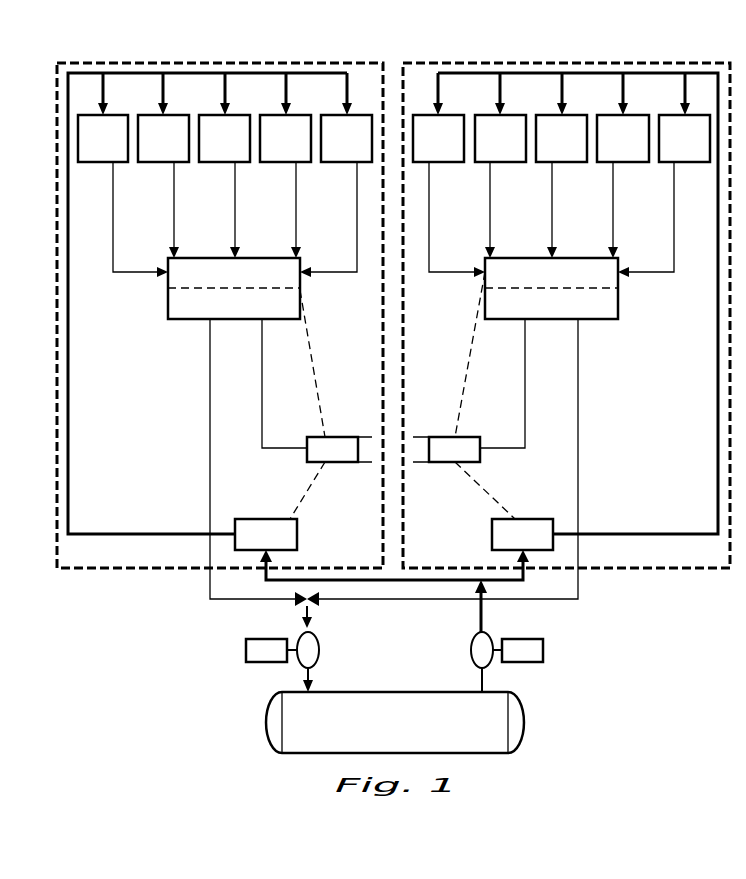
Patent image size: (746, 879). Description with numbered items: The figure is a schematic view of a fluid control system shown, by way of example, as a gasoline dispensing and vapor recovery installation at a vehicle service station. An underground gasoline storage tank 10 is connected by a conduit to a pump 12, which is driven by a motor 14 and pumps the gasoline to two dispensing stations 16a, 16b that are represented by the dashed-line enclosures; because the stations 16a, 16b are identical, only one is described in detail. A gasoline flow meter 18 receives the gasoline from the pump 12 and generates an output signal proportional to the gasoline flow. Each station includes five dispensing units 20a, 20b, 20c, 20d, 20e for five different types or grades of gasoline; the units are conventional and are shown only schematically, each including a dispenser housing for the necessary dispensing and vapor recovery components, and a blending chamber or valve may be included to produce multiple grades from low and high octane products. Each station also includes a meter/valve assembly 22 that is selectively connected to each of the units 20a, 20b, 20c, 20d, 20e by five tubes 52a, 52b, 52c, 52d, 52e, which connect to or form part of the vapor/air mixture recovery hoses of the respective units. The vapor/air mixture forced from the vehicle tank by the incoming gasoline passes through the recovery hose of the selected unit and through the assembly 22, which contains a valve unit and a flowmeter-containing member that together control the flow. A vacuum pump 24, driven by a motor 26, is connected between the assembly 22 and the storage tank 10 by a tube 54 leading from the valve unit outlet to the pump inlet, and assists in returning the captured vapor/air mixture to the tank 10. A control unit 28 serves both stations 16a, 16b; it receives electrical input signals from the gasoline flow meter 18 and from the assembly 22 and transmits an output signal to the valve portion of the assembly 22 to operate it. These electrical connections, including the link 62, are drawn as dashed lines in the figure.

The underground gasoline storage tank 10 is at (408, 731).
The pump 12 is at (470, 652).
The motor 14 is at (545, 652).
The dispensing station 16a is at (196, 62).
The dispensing station 16b is at (552, 62).
The gasoline flow meter 18 is at (298, 538).
The dispensing unit 20a is at (118, 151).
The dispensing unit 20b is at (178, 151).
The dispensing unit 20c is at (239, 151).
The dispensing unit 20d is at (300, 151).
The dispensing unit 20e is at (361, 151).
The meter/valve assembly 22 is at (194, 324).
The vacuum pump 24 is at (320, 652).
The motor 26 is at (246, 650).
The control unit 28 is at (350, 468).
The tube 52a is at (133, 273).
The tube 52b is at (172, 186).
The tube 52c is at (233, 186).
The tube 52d is at (294, 186).
The tube 52e is at (335, 273).
The tube 54 is at (208, 440).
The communication link 62 is at (322, 372).